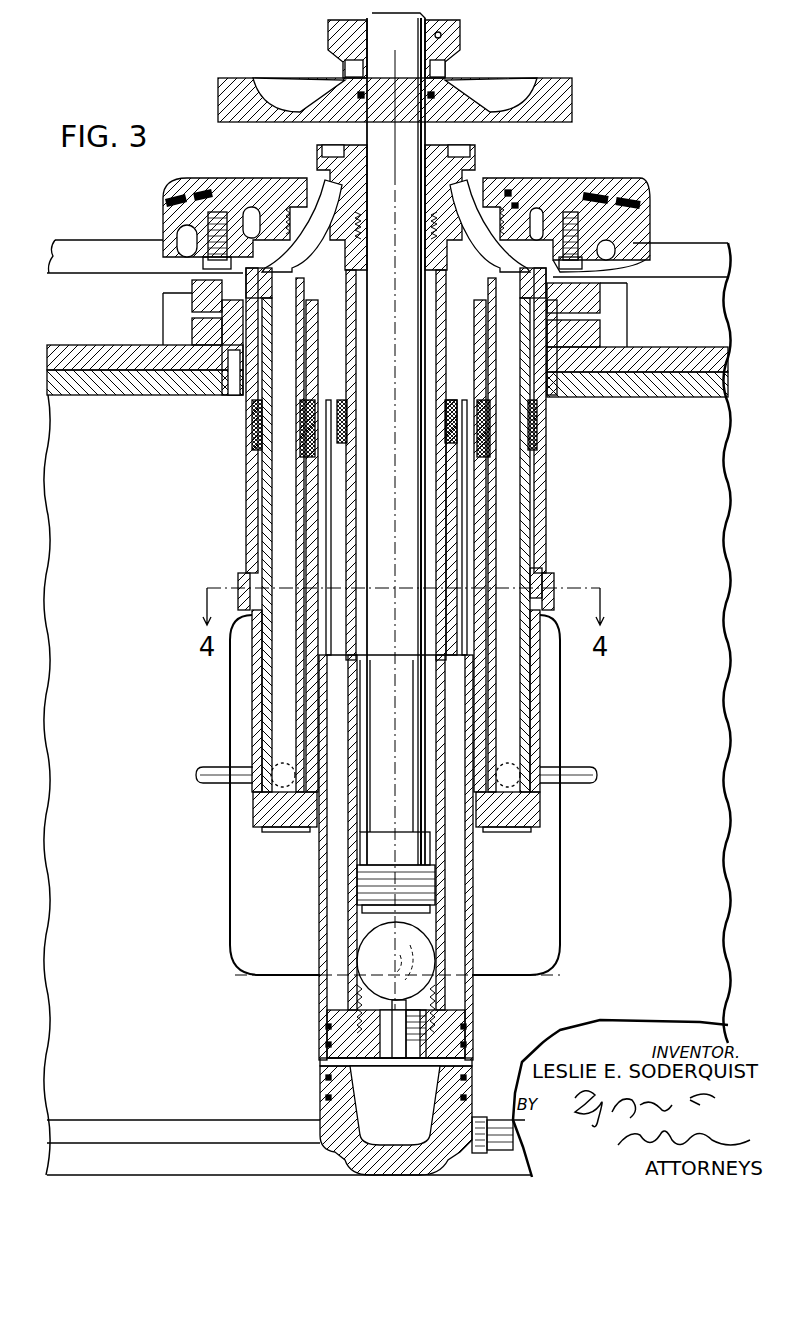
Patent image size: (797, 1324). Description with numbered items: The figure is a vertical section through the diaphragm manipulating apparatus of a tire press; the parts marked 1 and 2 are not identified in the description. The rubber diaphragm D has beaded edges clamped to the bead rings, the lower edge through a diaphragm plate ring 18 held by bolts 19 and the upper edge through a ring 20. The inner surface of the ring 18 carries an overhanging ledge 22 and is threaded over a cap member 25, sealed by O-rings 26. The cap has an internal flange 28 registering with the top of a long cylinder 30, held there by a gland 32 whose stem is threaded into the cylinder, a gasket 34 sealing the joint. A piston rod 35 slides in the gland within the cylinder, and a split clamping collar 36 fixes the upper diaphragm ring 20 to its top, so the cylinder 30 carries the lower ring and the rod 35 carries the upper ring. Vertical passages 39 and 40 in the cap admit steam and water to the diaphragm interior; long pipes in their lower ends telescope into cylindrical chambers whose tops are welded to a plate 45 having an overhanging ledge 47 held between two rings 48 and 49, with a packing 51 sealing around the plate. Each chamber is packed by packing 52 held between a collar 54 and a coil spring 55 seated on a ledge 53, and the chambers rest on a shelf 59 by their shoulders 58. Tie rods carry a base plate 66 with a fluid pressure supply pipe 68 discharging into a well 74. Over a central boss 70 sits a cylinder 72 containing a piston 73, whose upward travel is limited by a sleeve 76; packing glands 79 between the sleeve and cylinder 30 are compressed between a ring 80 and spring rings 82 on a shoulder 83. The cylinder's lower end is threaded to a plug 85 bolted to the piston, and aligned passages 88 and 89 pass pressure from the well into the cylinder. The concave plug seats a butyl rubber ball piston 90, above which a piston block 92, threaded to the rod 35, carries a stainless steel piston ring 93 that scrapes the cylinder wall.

The floor plate 1 is at (80, 393).
The wall 2 is at (57, 324).
The lower diaphragm ring 18 is at (196, 185).
The bolts 19 is at (560, 196).
The upper diaphragm ring 20 is at (572, 108).
The overhanging ledge 22 is at (305, 188).
The cap member 25 is at (335, 222).
The O-rings 26 is at (515, 205).
The internal flange 28 is at (478, 195).
The long cylinder 30 is at (442, 490).
The gland 32 is at (360, 228).
The gasket 34 is at (422, 237).
The piston rod 35 is at (410, 748).
The split clamping collar 36 is at (455, 43).
The vertical passage 39 is at (580, 258).
The vertical passage 40 is at (255, 275).
The plate 45 is at (552, 385).
The overhanging ledge 47 is at (225, 330).
The ring 48 is at (602, 305).
The ring 49 is at (600, 332).
The packing 51 is at (230, 340).
The packing 52 is at (537, 425).
The ledge 53 is at (525, 455).
The collar 54 is at (528, 347).
The coil spring 55 is at (535, 440).
The shoulders 58 is at (240, 583).
The intermediate shelf 59 is at (553, 581).
The base plate 66 is at (335, 1120).
The fluid pressure supply pipe 68 is at (505, 1128).
The central boss 70 is at (445, 1080).
The cylinder 72 is at (468, 1040).
The piston 73 is at (460, 1025).
The well 74 is at (455, 1100).
The sleeve 76 is at (458, 535).
The packing glands 79 is at (300, 440).
The ring 80 is at (452, 307).
The spring rings 82 is at (305, 437).
The shoulder 83 is at (345, 450).
The plug 85 is at (432, 1000).
The passage 88 is at (395, 1052).
The passage 89 is at (395, 1015).
The ball-type piston 90 is at (430, 948).
The piston block 92 is at (445, 902).
The piston ring 93 is at (358, 890).
The diaphragm D is at (622, 198).